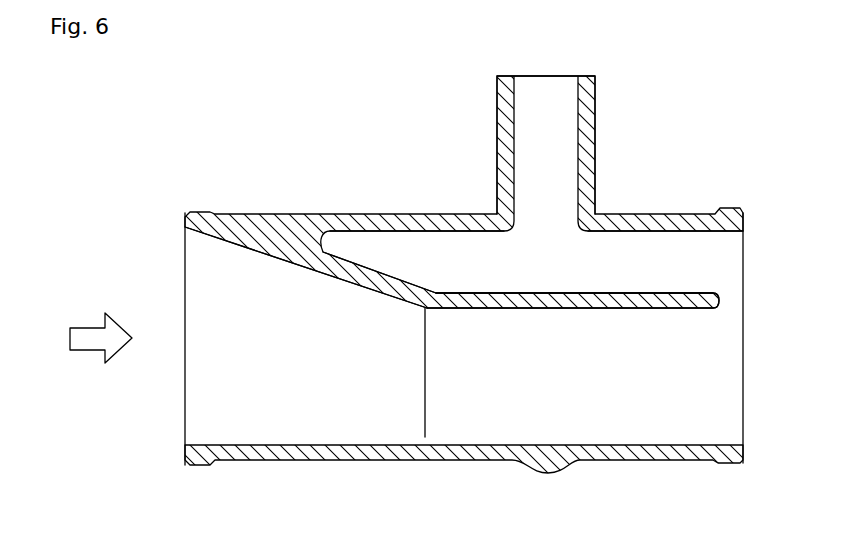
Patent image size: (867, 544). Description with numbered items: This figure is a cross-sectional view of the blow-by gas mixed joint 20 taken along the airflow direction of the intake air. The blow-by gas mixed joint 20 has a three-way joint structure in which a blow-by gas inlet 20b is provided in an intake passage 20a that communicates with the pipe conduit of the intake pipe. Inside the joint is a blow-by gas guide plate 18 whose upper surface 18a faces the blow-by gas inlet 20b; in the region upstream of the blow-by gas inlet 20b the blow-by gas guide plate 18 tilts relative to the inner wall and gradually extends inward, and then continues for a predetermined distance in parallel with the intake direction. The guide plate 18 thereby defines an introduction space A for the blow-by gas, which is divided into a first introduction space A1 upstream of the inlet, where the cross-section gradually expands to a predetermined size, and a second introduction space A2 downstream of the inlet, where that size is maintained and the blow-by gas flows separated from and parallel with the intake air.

The blow-by gas mixed joint 20 is at (702, 208).
The intake passage 20a is at (298, 214).
The blow-by gas inlet 20b is at (597, 120).
The blow-by gas guide plate 18 is at (650, 308).
The upper surface of partition plate 18a is at (553, 292).
The first introduction space A1 is at (396, 253).
The introduction space A is at (508, 265).
The second introduction space A2 is at (620, 250).